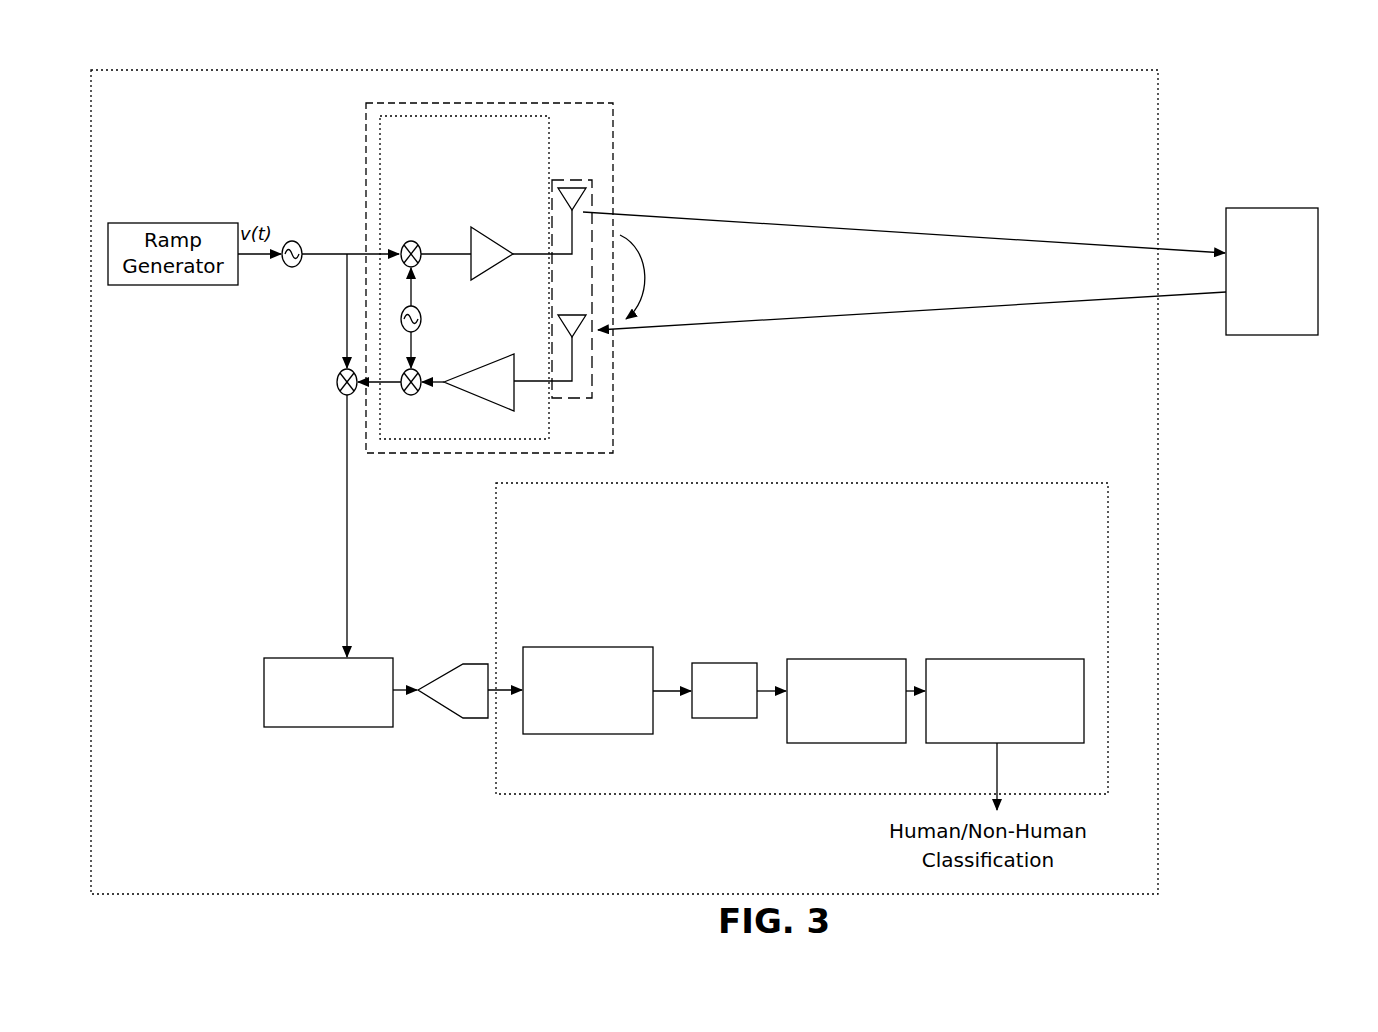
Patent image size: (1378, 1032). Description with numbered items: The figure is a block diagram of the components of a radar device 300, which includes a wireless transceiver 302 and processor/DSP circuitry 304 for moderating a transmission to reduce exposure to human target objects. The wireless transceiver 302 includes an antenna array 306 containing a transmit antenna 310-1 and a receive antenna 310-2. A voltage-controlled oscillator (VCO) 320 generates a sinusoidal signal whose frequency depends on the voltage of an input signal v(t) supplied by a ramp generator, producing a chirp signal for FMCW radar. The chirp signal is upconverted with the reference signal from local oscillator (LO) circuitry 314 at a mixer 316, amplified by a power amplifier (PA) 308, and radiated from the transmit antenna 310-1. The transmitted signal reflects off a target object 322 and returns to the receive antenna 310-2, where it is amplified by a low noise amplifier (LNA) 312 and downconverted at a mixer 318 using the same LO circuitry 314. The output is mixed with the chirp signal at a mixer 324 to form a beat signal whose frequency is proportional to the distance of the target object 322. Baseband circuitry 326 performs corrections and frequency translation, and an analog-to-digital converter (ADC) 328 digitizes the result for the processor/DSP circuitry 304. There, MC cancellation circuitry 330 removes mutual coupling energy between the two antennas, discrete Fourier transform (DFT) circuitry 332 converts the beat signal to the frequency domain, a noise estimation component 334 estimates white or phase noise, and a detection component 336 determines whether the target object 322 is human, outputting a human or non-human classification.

The radar device 300 is at (622, 70).
The wireless transceiver 302 is at (366, 128).
The processor/DSP circuitry 304 is at (802, 638).
The antenna array 306 is at (573, 179).
The power amplifier (PA) 308 is at (483, 234).
The transmit antenna 310-1 is at (583, 200).
The receive antenna 310-2 is at (583, 330).
The low noise amplifier (LNA) 312 is at (491, 363).
The local oscillator (LO) circuitry 314 is at (432, 317).
The mixer 316 is at (411, 242).
The mixer 318 is at (411, 396).
The voltage-controlled oscillator (VCO) 320 is at (293, 240).
The target object 322 is at (1278, 202).
The mixer 324 is at (337, 379).
The baseband circuitry 326 is at (295, 655).
The analog-to-digital converter (ADC) 328 is at (458, 663).
The MC cancellation circuitry 330 is at (559, 646).
The discrete Fourier transform (DFT) circuitry 332 is at (716, 660).
The noise estimation component 334 is at (848, 656).
The detection component 336 is at (980, 656).